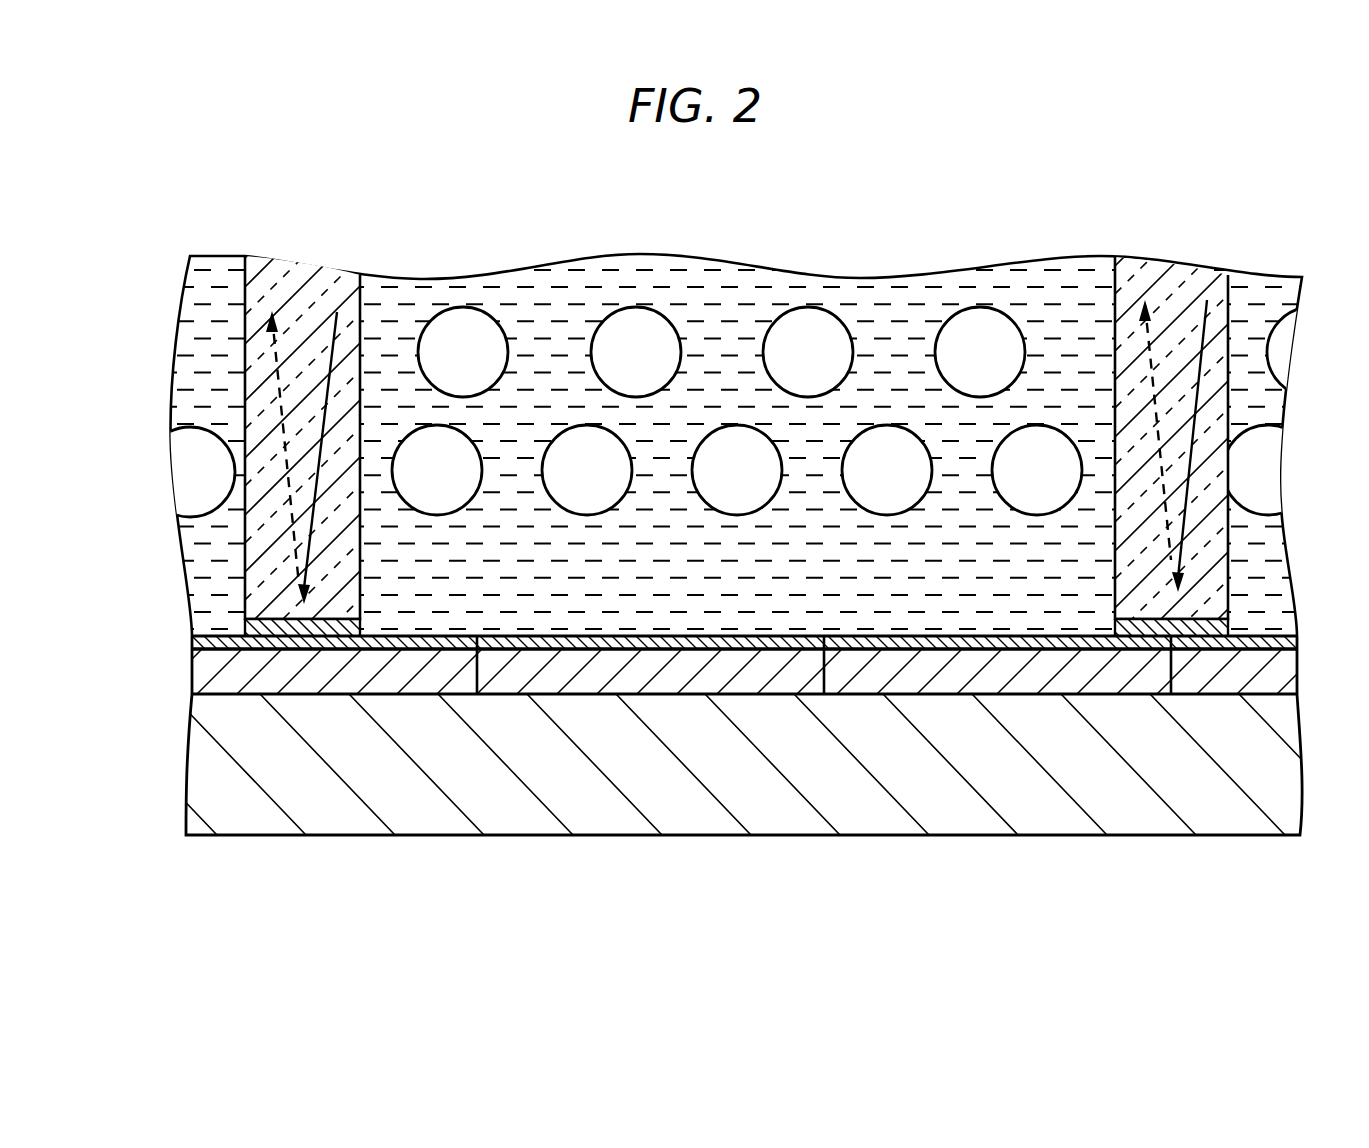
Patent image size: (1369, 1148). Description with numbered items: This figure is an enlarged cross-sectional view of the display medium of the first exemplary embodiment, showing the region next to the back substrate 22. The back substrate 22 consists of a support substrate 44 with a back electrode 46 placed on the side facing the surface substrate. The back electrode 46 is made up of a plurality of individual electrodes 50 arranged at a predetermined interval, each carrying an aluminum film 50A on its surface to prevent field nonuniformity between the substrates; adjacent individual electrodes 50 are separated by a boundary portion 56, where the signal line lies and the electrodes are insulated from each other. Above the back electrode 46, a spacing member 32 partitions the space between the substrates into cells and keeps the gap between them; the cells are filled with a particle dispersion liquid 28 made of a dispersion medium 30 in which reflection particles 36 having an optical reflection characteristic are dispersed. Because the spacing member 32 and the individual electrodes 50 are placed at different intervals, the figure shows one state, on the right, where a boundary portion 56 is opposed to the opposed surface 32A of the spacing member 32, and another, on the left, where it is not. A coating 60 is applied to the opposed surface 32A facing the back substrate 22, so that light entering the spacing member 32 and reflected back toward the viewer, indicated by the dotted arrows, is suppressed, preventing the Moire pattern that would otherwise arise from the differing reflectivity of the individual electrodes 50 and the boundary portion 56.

The back substrate 22 is at (702, 760).
The particle dispersion liquid 28 is at (735, 412).
The dispersion medium 30 is at (736, 328).
The spacing member 32 is at (362, 296).
The opposed surface 32A is at (243, 630).
The reflection particles 36 is at (468, 320).
The support substrate 44 is at (725, 764).
The back electrode 46 is at (707, 760).
The individual electrodes 50 is at (744, 775).
The aluminum film 50A is at (400, 649).
The boundary portion 56 is at (483, 632).
The coating 60 is at (283, 622).